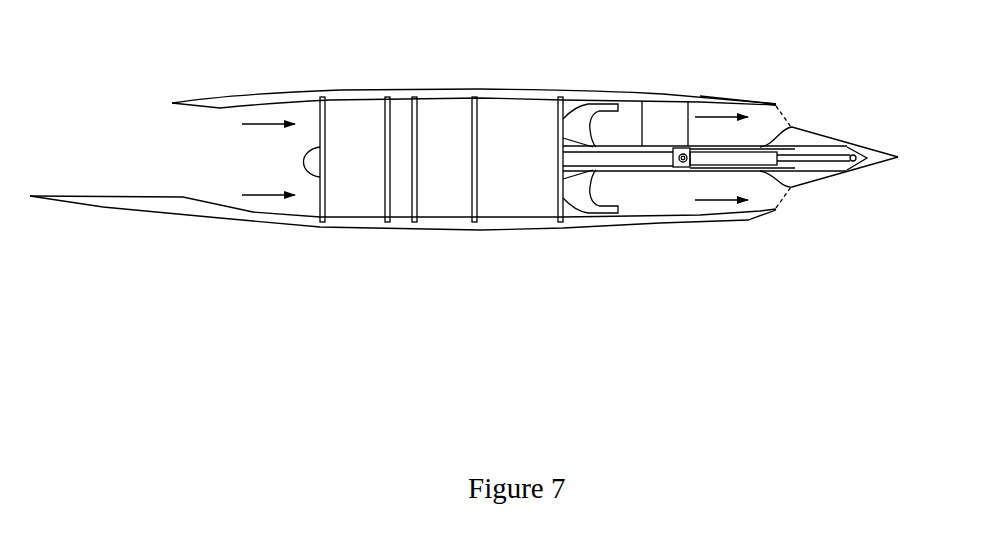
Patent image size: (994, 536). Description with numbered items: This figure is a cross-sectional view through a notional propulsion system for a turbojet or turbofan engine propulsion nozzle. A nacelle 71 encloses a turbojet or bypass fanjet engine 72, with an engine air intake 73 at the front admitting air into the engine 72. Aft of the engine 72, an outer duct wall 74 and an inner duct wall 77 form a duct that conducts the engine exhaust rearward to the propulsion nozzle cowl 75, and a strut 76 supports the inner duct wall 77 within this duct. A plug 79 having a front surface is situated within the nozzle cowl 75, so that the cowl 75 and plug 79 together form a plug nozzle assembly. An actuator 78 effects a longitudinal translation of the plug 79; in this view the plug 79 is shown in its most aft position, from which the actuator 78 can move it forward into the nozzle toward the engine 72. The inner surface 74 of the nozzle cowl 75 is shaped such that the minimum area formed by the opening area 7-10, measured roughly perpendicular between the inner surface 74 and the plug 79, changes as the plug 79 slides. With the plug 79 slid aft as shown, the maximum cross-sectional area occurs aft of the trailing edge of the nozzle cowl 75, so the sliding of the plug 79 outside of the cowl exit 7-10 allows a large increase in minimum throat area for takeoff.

The nacelle 71 is at (530, 87).
The turbojet or bypass fanjet engine 72 is at (353, 127).
The engine air intake 73 is at (173, 146).
The outer duct wall 74 is at (737, 100).
The propulsion nozzle cowl 75 is at (775, 100).
The strut 76 is at (663, 97).
The inner duct wall 77 is at (667, 170).
The actuator 78 is at (718, 164).
The plug 79 is at (873, 148).
The opening area 7-10 is at (788, 113).